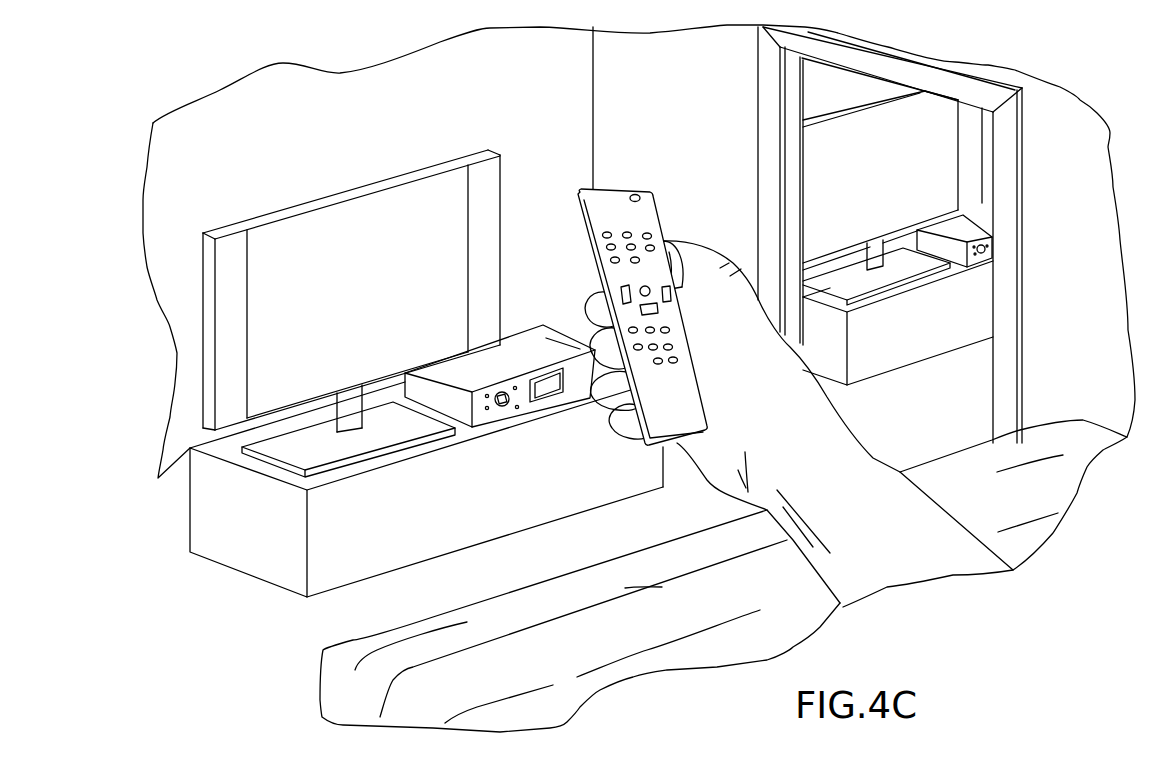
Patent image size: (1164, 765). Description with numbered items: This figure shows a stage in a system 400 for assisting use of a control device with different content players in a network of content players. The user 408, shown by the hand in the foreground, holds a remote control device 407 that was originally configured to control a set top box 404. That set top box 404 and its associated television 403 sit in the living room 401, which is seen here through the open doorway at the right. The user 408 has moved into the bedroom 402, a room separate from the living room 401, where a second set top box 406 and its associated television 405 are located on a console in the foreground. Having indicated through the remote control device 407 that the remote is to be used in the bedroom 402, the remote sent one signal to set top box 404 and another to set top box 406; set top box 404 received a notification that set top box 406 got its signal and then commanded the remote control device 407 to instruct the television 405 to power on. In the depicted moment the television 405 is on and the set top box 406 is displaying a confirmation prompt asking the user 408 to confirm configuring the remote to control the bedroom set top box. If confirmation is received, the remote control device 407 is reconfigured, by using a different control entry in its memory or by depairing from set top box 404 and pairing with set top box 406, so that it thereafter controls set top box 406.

The home environment 400 is at (1098, 88).
The living room 401 is at (985, 352).
The bedroom 402 is at (235, 617).
The television 403 is at (977, 168).
The set top box 404 is at (1000, 200).
The television 405 is at (500, 173).
The set top box 406 is at (568, 373).
The remote control device 407 is at (658, 213).
The user 408 is at (717, 473).